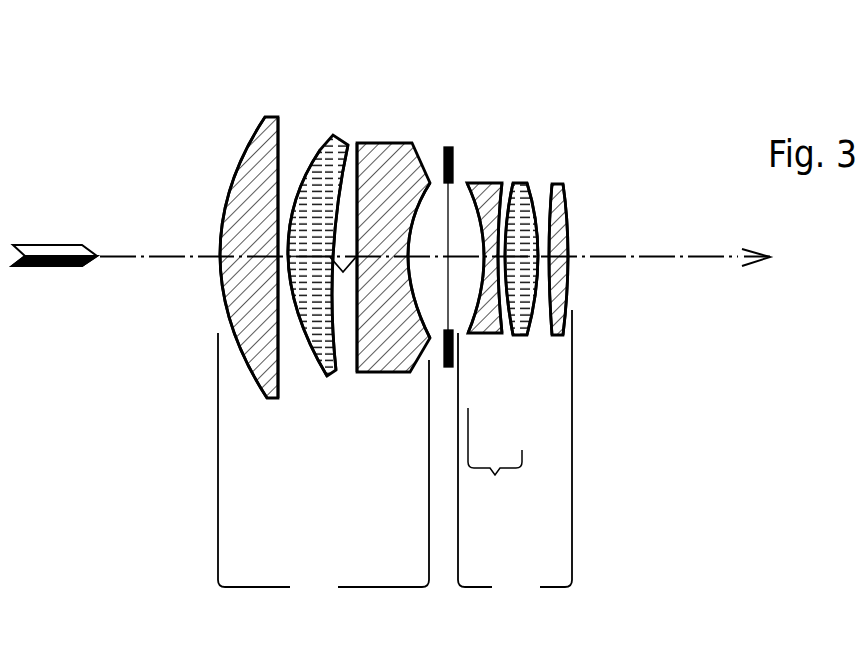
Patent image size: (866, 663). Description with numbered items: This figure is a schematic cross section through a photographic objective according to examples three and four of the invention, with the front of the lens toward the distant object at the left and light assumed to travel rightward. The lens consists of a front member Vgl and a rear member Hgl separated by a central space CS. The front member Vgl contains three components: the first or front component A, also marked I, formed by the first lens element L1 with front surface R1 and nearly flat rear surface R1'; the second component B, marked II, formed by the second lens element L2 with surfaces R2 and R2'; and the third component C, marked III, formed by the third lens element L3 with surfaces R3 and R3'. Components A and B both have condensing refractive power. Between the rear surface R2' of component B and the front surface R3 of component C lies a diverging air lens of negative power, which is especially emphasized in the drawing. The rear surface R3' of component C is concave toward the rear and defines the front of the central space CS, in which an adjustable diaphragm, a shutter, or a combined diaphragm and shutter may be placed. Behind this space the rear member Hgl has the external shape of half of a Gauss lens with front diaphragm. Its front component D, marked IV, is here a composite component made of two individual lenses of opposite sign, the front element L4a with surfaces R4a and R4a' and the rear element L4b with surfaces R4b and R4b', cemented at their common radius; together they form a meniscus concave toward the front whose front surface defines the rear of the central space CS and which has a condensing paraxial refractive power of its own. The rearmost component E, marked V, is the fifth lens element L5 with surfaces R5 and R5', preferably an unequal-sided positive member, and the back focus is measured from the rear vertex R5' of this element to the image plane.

The first lens element L1 is at (242, 257).
The second lens element L2 is at (319, 240).
The third lens element L3 is at (395, 261).
The front element of fourth component L4a is at (484, 242).
The rear element of fourth component L4b is at (556, 264).
The fifth lens element L5 is at (595, 321).
The front surface radius of first element R1 is at (232, 226).
The rear surface radius of first element R1' is at (266, 224).
The front surface radius of second element R2 is at (307, 226).
The rear surface radius of second element R2' is at (323, 193).
The front surface radius of third element R3 is at (366, 215).
The rear surface radius of third element R3' is at (422, 204).
The front surface radius of element 4a R4a is at (474, 220).
The rear surface radius of element 4a R4a' is at (494, 201).
The front surface radius of element 4b R4b is at (537, 205).
The rear surface radius of element 4b R4b' is at (570, 222).
The front surface radius of fifth element R5 is at (582, 251).
The rear surface radius of fifth element R5' is at (610, 259).
The central space CS is at (427, 255).
The first component I is at (268, 463).
The second component II is at (336, 463).
The third component III is at (387, 463).
The fourth component IV is at (490, 540).
The fifth component V is at (550, 540).
The front component A is at (268, 558).
The second component B is at (335, 558).
The third component C is at (386, 558).
The front component of rear member D is at (491, 558).
The rearmost component E is at (550, 558).
The front member Vgl is at (323, 468).
The rear member Hgl is at (515, 455).